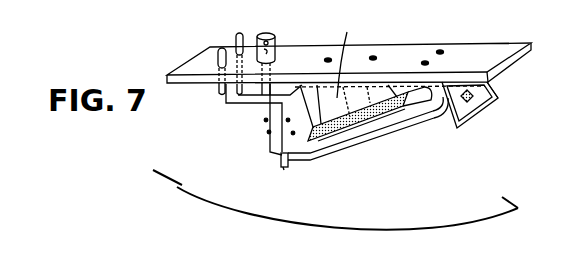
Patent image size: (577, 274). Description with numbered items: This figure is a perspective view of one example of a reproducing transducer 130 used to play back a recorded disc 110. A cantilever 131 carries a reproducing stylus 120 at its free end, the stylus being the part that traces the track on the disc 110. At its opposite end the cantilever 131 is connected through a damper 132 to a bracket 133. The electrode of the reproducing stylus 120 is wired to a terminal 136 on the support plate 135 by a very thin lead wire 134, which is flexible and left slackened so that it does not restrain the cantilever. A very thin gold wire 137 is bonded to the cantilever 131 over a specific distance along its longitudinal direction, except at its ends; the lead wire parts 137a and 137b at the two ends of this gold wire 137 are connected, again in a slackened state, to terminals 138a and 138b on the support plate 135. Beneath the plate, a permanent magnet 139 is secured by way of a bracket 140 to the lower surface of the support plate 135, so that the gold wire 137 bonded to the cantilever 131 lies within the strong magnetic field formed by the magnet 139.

The disc 110 is at (177, 189).
The reproducing stylus 120 is at (283, 169).
The reproducing transducer 130 is at (433, 31).
The cantilever 131 is at (374, 139).
The damper 132 is at (441, 118).
The bracket 133 is at (493, 99).
The lead wire 134 is at (267, 126).
The support plate 135 is at (505, 46).
The terminal 136 is at (273, 34).
The gold wire 137 is at (340, 150).
The lead wire part 137a is at (421, 118).
The lead wire part 137b is at (281, 150).
The terminal 138a is at (237, 33).
The terminal 138b is at (214, 53).
The permanent magnet 139 is at (395, 128).
The bracket 140 is at (356, 55).